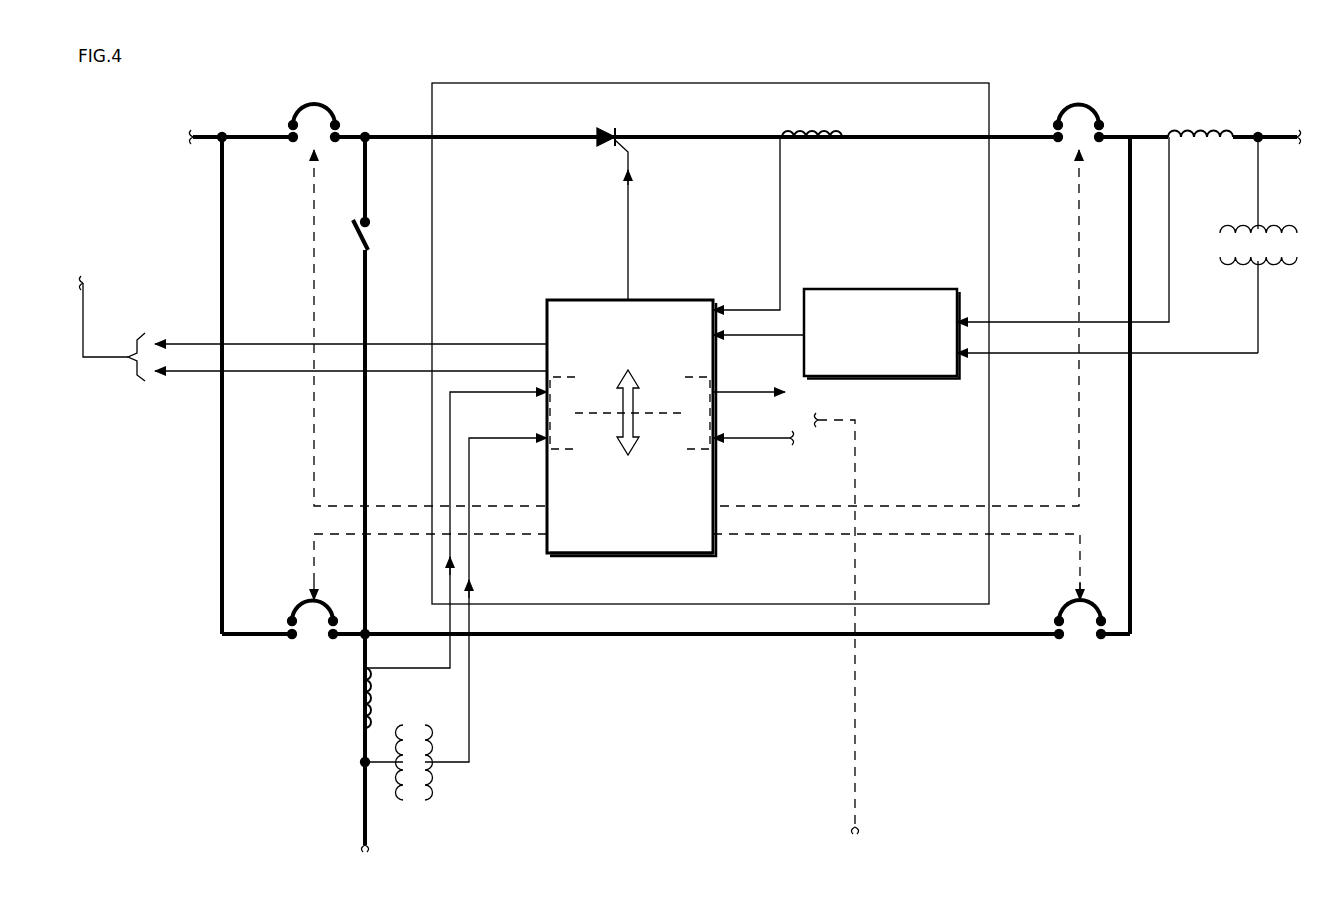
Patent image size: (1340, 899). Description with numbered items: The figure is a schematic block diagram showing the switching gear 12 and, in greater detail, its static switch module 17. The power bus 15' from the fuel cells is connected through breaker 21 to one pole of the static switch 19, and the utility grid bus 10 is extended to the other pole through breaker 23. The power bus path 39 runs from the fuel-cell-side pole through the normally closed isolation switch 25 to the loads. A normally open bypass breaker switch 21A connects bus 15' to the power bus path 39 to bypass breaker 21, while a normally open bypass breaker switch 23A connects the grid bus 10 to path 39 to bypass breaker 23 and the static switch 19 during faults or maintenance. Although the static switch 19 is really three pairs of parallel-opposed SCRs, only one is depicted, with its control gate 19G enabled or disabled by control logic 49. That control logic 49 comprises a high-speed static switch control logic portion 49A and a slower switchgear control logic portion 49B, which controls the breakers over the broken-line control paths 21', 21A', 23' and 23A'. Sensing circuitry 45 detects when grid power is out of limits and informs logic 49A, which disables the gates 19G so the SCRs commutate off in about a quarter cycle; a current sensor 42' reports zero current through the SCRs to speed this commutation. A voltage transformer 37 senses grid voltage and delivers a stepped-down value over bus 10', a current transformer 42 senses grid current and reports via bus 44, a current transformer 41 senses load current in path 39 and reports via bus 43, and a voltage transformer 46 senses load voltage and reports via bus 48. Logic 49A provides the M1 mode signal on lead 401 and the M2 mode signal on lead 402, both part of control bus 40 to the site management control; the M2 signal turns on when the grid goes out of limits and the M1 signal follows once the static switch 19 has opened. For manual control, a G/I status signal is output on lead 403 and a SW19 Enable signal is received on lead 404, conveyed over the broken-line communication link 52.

The utility grid bus 10 is at (1291, 100).
The grid voltage reference bus 10' is at (1107, 371).
The switching gear 12 is at (165, 120).
The power bus from fuel cells 15' is at (218, 106).
The static switch module 17 is at (510, 76).
The static switch 19 is at (598, 128).
The control gates 19G is at (630, 252).
The breaker switch 21 is at (323, 108).
The control path 21' is at (408, 328).
The bypass breaker switch 21A is at (290, 609).
The control path 21A' is at (406, 560).
The breaker switch 23 is at (1072, 108).
The control path 23' is at (896, 328).
The bypass breaker switch 23A is at (1060, 609).
The control path 23A' is at (918, 560).
The isolation switch 25 is at (368, 228).
The voltage transformer 37 is at (1272, 268).
The power bus path 39 is at (368, 275).
The control bus 40 is at (86, 302).
The current transformer 41 is at (355, 690).
The current transformer 42 is at (1193, 121).
The current sensor 42' is at (802, 120).
The bus 43 is at (390, 668).
The bus 44 is at (1062, 322).
The grid out of limits sensing circuitry 45 is at (886, 289).
The voltage transformer 46 is at (412, 806).
The bus 48 is at (472, 720).
The control logic 49 is at (590, 298).
The static switch control logic 49A is at (688, 300).
The switchgear control logic 49B is at (688, 555).
The communication link 52 is at (856, 738).
The lead 401 is at (349, 307).
The lead 402 is at (349, 409).
The lead 403 is at (745, 392).
The lead 404 is at (748, 442).
The M1 mode signal M1 is at (164, 325).
The M2 mode signal M2 is at (164, 390).